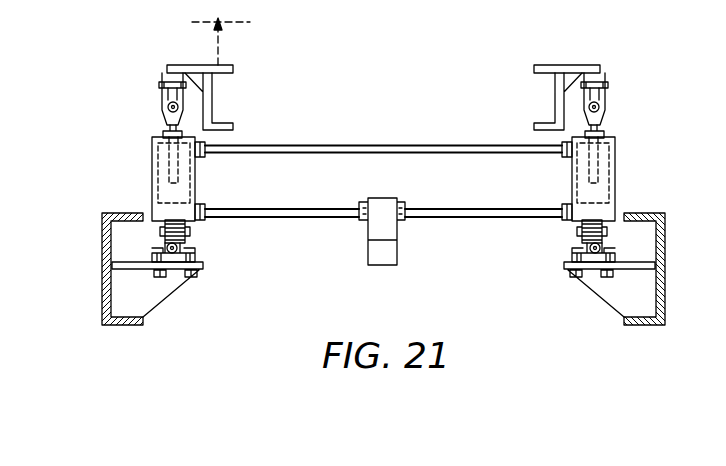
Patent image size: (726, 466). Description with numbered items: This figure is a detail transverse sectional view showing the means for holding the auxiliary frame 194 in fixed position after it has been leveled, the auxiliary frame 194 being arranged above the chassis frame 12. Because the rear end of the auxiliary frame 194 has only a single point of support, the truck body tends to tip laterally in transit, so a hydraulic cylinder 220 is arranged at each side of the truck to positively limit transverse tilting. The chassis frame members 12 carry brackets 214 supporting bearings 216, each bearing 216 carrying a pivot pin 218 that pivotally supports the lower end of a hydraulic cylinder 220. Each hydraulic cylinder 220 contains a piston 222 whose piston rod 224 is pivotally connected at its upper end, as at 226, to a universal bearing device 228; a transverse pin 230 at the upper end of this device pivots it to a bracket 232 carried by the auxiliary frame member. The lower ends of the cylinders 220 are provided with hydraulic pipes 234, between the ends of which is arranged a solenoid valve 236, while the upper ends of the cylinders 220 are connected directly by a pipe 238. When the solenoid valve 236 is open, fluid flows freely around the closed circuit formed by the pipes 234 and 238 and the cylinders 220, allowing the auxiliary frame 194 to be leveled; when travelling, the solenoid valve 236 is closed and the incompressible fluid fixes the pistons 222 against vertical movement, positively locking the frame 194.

The chassis frame 12 is at (102, 230).
The auxiliary frame 194 is at (232, 123).
The bracket 214 is at (171, 289).
The bearing 216 is at (198, 258).
The pivot pin 218 is at (182, 250).
The hydraulic cylinder 220 is at (152, 187).
The piston 222 is at (205, 189).
The piston rod 224 is at (162, 125).
The pivotal connection 226 is at (166, 109).
The universal bearing device 228 is at (161, 87).
The transverse pin 230 is at (162, 80).
The bracket 232 is at (193, 64).
The hydraulic pipe 234 is at (338, 208).
The solenoid valve 236 is at (368, 242).
The pipe 238 is at (441, 144).